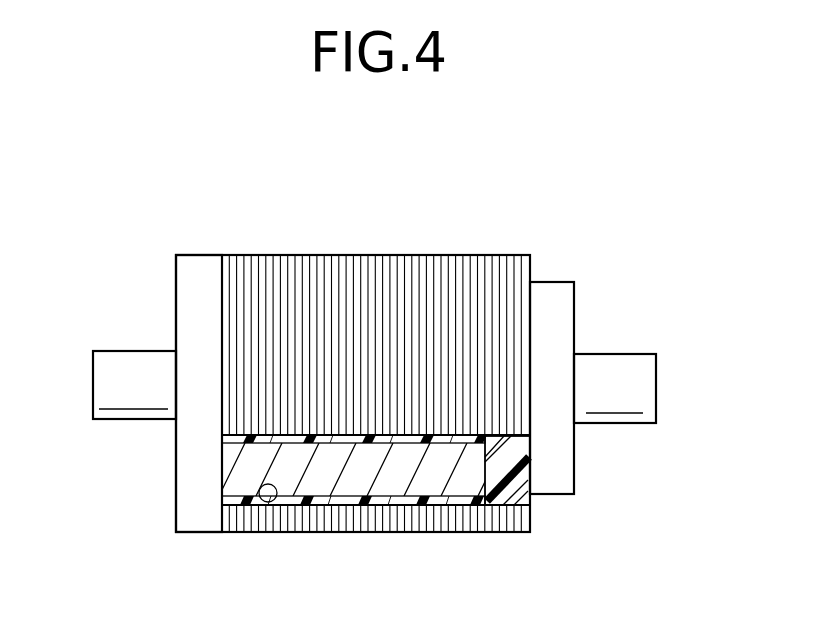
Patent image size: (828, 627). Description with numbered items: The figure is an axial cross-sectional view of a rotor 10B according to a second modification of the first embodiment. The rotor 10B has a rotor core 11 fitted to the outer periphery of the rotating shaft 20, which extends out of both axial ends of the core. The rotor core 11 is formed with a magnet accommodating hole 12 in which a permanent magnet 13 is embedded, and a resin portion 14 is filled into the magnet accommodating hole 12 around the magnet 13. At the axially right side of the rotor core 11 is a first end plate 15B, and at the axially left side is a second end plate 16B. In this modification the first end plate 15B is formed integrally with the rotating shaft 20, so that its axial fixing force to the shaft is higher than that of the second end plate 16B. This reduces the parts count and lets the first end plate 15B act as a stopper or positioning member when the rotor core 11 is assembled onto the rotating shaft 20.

The rotor 10B is at (431, 197).
The rotor core 11 is at (283, 264).
The magnet accommodating hole 12 is at (281, 488).
The magnet 13 is at (425, 486).
The resin portion 14 is at (496, 494).
The first end plate 15B is at (554, 292).
The second end plate 16B is at (202, 264).
The rotating shaft 20 is at (112, 349).